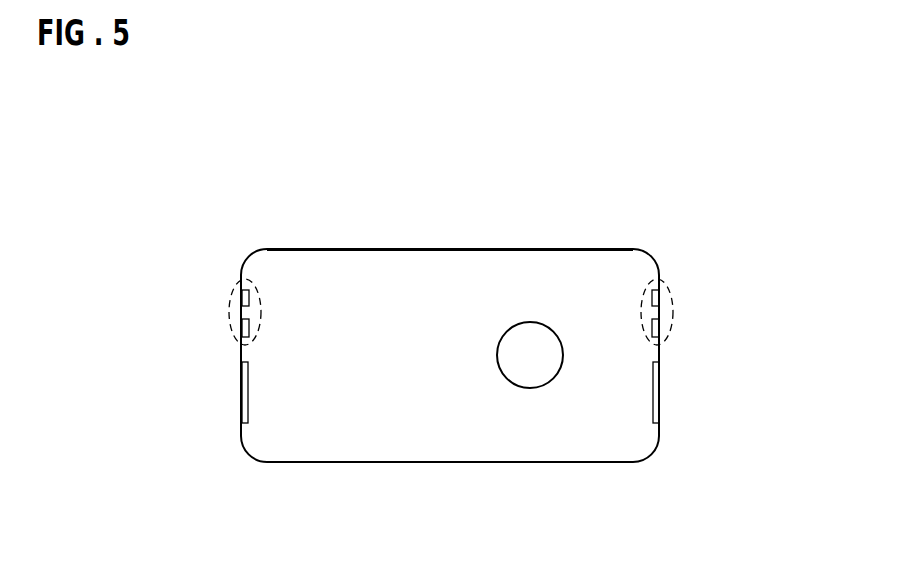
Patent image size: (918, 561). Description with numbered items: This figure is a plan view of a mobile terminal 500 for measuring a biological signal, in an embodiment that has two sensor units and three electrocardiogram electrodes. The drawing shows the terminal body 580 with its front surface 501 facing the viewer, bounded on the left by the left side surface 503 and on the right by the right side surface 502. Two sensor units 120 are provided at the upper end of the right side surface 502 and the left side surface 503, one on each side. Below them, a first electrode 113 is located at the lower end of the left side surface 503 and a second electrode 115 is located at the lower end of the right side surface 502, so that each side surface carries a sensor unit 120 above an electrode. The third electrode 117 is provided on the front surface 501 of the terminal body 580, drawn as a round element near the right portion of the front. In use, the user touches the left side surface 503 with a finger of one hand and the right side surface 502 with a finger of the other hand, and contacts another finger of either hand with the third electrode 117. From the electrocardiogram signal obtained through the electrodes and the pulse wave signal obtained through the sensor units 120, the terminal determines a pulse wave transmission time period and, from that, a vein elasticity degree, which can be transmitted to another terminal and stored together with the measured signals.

The mobile terminal 500 is at (716, 190).
The front surface 501 is at (372, 260).
The terminal body 580 is at (512, 250).
The sensor unit 120 is at (230, 317).
The first electrode 113 is at (241, 388).
The second electrode 115 is at (660, 390).
The left side surface 503 is at (241, 430).
The right side surface 502 is at (660, 430).
The third electrode 117 is at (530, 388).